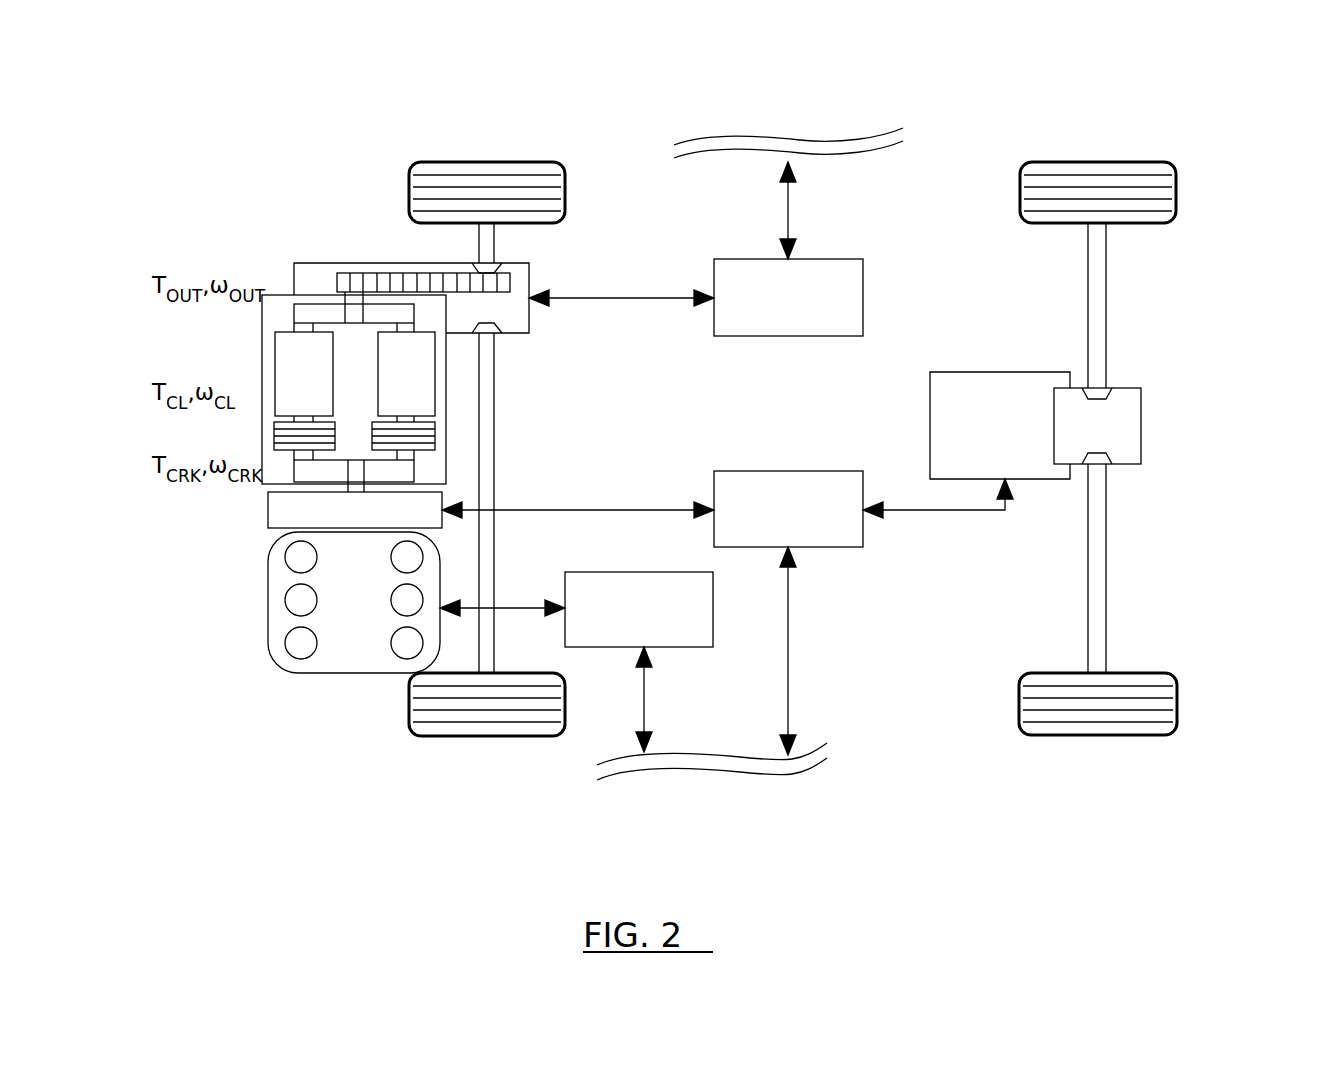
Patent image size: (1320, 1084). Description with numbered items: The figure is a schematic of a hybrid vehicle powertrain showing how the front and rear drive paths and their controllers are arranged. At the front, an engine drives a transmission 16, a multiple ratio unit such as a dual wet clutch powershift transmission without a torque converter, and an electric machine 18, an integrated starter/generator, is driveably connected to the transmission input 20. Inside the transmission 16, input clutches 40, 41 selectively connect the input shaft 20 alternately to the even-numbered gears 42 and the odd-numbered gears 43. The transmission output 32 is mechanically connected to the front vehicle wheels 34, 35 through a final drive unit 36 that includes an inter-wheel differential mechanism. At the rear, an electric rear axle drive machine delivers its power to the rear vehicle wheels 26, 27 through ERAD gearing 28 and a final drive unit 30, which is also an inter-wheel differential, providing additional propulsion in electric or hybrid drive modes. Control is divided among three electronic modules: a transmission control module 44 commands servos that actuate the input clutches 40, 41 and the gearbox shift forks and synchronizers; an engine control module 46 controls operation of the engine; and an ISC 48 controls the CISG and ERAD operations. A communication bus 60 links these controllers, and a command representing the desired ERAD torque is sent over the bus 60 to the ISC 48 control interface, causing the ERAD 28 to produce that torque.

The transmission 16 is at (262, 346).
The electric machine 18 is at (842, 547).
The transmission input 20 is at (357, 473).
The vehicle wheel 26 is at (1140, 162).
The vehicle wheel 27 is at (1140, 735).
The ERAD gearing 28 is at (997, 372).
The final drive unit 30 is at (1141, 418).
The transmission output 32 is at (353, 307).
The vehicle wheel 34 is at (461, 162).
The vehicle wheel 35 is at (468, 736).
The final drive unit 36 is at (529, 283).
The input clutch 40 is at (435, 437).
The input clutch 41 is at (274, 433).
The even-numbered gears 42 is at (435, 352).
The odd-numbered gears 43 is at (289, 332).
The transmission control module 44 is at (847, 259).
The engine control module 46 is at (692, 647).
The ISC 48 is at (268, 510).
The communication bus 60 is at (812, 145).